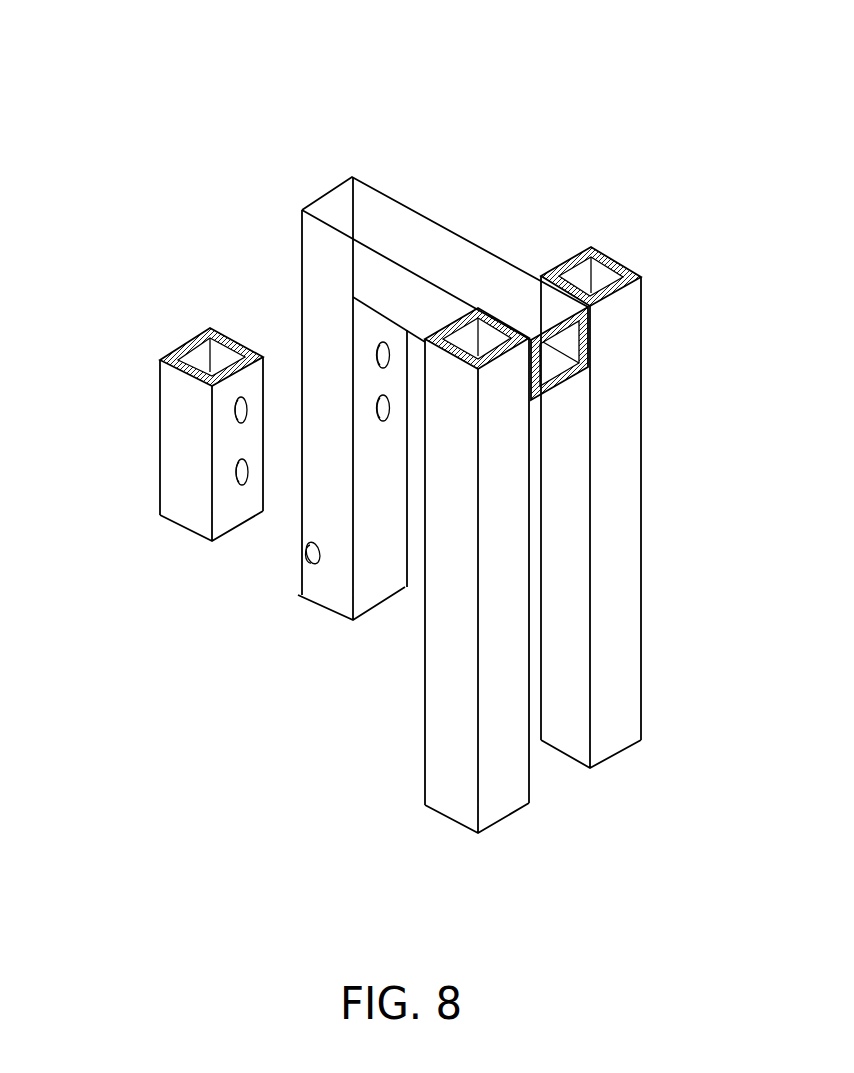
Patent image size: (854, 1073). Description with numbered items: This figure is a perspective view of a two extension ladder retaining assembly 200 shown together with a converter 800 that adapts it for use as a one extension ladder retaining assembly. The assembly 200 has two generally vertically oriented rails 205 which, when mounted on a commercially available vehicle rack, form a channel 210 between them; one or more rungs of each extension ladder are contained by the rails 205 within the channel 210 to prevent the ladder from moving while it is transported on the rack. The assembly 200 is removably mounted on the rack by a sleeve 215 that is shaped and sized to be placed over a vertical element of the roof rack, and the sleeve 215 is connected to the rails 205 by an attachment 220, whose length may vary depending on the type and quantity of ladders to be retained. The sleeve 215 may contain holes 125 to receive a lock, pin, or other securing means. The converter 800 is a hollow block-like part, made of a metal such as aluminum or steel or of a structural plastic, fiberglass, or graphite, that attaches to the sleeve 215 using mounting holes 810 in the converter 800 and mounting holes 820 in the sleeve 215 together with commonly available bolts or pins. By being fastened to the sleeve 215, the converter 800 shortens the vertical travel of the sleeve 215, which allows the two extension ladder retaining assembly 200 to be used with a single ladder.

The two extension ladder retaining assembly 200 is at (462, 176).
The rail 205 is at (460, 775).
The channel 210 is at (543, 760).
The attachment 220 is at (392, 218).
The sleeve 215 is at (323, 516).
The mounting holes 820 is at (377, 407).
The holes 125 is at (308, 557).
The converter 800 is at (145, 365).
The mounting holes 810 is at (240, 477).